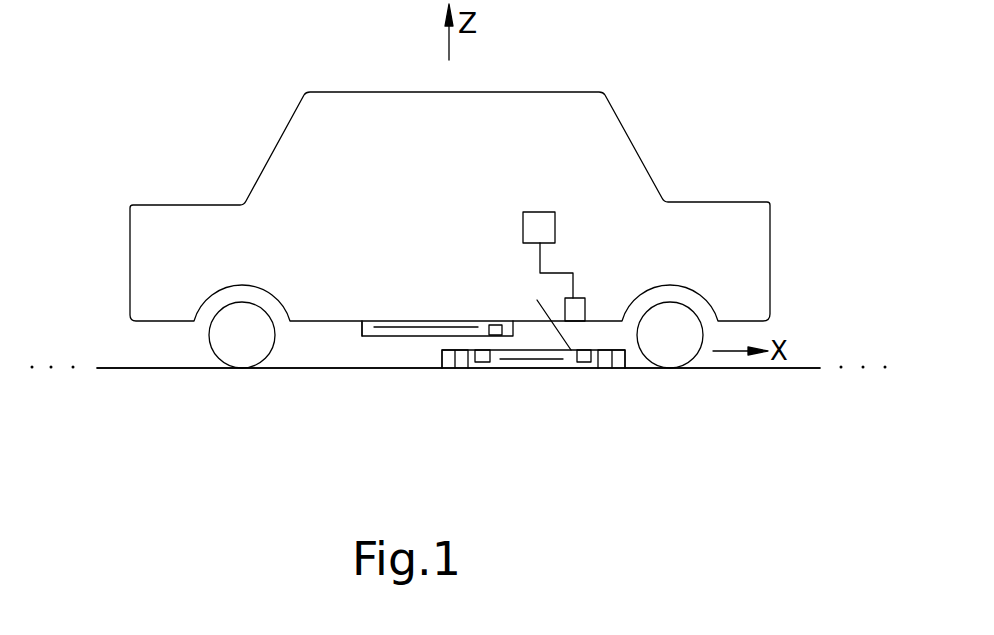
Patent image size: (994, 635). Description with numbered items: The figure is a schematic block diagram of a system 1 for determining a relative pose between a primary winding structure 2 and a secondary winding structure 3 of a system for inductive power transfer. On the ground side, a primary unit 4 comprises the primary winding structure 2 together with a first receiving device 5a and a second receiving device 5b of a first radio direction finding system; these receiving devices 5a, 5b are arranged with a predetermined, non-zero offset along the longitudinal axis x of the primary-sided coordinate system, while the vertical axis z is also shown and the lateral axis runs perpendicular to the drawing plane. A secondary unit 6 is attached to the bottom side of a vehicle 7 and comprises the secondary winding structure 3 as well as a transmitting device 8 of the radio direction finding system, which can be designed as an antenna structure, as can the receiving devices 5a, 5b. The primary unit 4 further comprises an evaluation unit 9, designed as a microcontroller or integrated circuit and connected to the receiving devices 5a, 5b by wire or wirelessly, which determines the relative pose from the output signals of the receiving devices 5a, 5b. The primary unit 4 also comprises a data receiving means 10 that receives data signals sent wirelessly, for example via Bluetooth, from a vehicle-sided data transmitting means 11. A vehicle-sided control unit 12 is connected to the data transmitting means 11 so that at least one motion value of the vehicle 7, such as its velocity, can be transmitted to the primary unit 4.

The system 1 is at (334, 432).
The primary winding structure 2 is at (533, 360).
The secondary winding structure 3 is at (393, 328).
The primary unit 4 is at (542, 308).
The first receiving device 5a is at (482, 362).
The second receiving device 5b is at (585, 362).
The secondary unit 6 is at (363, 333).
The vehicle 7 is at (627, 137).
The transmitting device 8 is at (495, 328).
The evaluation unit 9 is at (460, 355).
The data receiving means 10 is at (607, 357).
The data transmitting means 11 is at (578, 308).
The control unit 12 is at (537, 225).